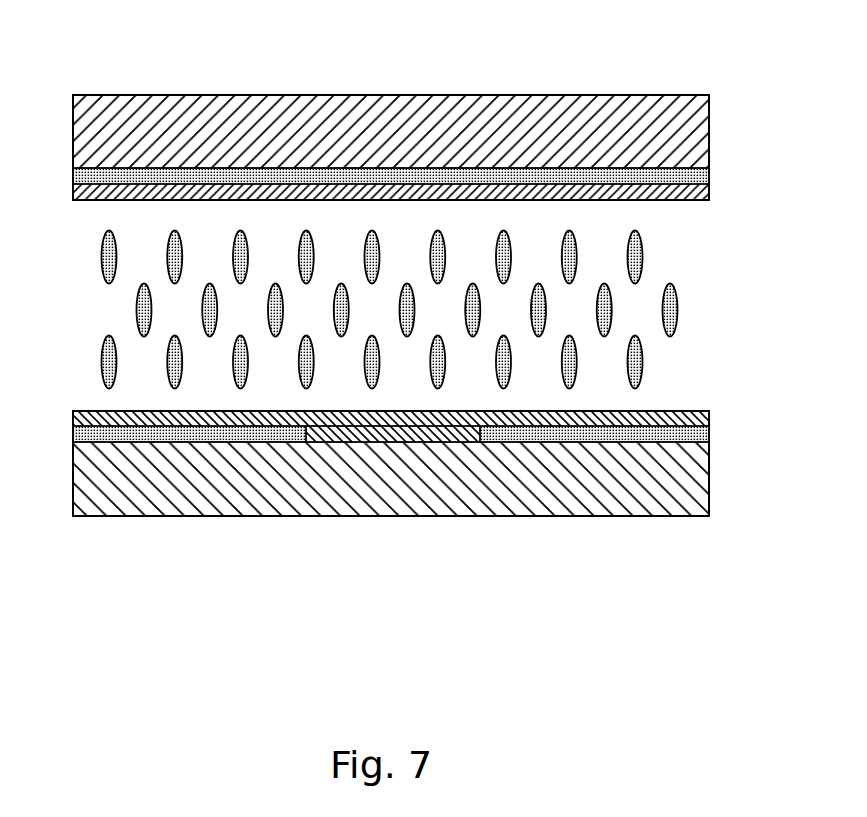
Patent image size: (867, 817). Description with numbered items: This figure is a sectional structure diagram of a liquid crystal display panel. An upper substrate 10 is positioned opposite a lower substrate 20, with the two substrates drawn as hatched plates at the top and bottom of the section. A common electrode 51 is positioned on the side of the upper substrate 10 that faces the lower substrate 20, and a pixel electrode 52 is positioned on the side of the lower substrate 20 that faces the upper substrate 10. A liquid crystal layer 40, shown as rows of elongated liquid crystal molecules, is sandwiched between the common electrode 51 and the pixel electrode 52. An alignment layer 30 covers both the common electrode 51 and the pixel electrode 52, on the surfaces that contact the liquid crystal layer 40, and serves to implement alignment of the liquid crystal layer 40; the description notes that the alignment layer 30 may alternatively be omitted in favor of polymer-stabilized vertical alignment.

The upper substrate 10 is at (692, 125).
The lower substrate 20 is at (642, 500).
The alignment layer 30 is at (86, 190).
The liquid crystal layer 40 is at (664, 310).
The common electrode 51 is at (687, 178).
The pixel electrode 52 is at (695, 433).